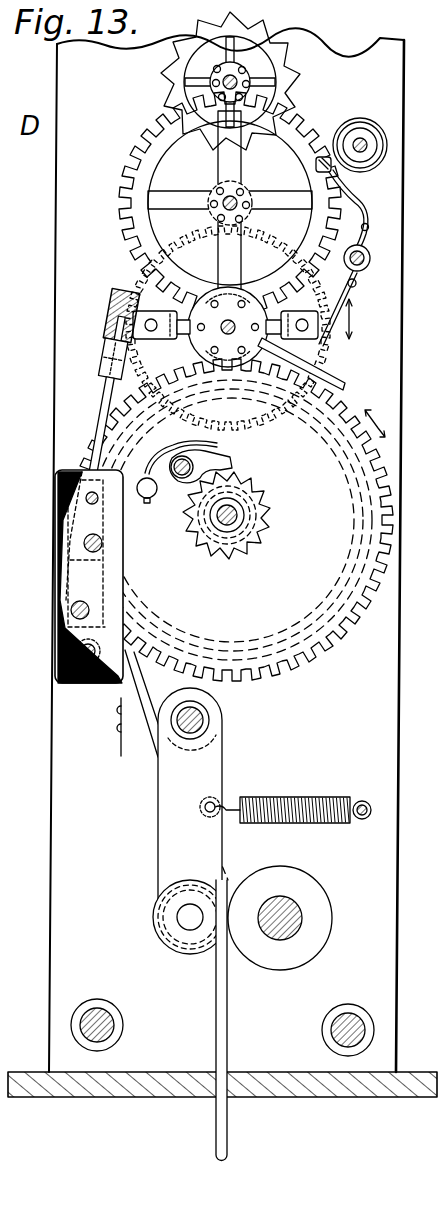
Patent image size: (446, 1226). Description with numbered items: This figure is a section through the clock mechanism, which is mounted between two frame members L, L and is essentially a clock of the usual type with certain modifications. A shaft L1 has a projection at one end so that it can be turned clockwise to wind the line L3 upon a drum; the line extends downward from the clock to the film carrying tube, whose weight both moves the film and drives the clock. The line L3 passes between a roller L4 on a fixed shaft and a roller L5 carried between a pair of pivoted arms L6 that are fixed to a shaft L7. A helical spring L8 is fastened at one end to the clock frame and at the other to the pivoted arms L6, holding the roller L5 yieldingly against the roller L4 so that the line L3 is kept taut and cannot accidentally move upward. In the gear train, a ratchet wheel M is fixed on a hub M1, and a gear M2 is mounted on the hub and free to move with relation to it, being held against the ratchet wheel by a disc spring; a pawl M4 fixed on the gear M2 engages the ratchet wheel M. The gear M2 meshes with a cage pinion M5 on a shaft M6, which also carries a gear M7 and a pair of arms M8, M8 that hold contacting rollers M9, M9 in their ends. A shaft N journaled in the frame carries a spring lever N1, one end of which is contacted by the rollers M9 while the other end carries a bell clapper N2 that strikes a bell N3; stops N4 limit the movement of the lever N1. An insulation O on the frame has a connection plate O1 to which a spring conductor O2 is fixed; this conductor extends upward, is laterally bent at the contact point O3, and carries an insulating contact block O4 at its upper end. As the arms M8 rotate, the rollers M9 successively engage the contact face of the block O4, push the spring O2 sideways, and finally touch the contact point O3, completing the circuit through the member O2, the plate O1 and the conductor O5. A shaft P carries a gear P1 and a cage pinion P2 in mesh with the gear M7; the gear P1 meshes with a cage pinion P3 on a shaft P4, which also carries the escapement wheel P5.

The frame member L is at (396, 113).
The shaft L1 is at (226, 520).
The line L3 is at (221, 1028).
The roller L4 is at (318, 897).
The roller L5 is at (184, 935).
The pivoted arms L6 is at (218, 766).
The shaft L7 is at (204, 721).
The helical spring L8 is at (314, 810).
The ratchet wheel M is at (268, 508).
The hub M1 is at (262, 530).
The gear M2 is at (318, 648).
The pawl M4 is at (232, 466).
The cage pinion M5 is at (340, 383).
The shaft M6 is at (228, 322).
The gear M7 is at (335, 347).
The arms M8 is at (272, 322).
The contacting rollers M9 is at (153, 341).
The shaft N is at (371, 258).
The spring lever N1 is at (372, 237).
The bell clapper N2 is at (330, 157).
The bell N3 is at (362, 136).
The stops N4 is at (366, 224).
The insulation O is at (58, 648).
The connection plate O1 is at (72, 578).
The spring conductor O2 is at (101, 395).
The contact point O3 is at (112, 312).
The contact block O4 is at (100, 356).
The conductor O5 is at (118, 741).
The shaft P is at (224, 199).
The gear P1 is at (129, 230).
The cage pinion P2 is at (247, 206).
The cage pinion P3 is at (246, 83).
The shaft P4 is at (223, 78).
The escapement wheel P5 is at (290, 64).